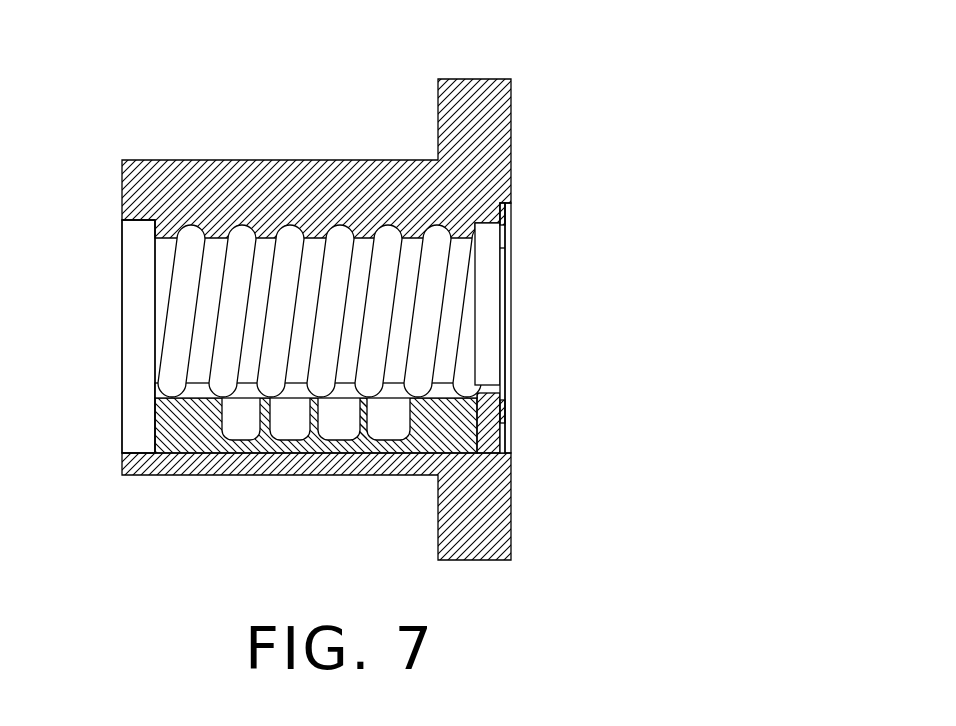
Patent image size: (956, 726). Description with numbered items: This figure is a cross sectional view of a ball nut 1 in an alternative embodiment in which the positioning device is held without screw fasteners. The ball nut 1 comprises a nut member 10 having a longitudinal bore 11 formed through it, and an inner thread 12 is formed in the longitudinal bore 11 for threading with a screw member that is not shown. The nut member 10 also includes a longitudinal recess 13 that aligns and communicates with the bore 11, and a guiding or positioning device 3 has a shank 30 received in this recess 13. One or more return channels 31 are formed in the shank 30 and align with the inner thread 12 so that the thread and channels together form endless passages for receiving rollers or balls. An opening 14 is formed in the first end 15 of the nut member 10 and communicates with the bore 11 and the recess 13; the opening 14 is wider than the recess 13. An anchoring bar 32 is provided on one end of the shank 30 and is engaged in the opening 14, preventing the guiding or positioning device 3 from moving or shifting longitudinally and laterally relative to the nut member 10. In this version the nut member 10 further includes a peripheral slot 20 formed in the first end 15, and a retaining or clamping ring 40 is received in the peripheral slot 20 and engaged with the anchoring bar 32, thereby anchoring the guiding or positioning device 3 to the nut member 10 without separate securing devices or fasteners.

The ball nut 1 is at (357, 315).
The guiding or positioning device 3 is at (156, 404).
The nut member 10 is at (257, 160).
The longitudinal bore 11 is at (481, 307).
The inner thread 12 is at (390, 222).
The longitudinal recess 13 is at (282, 452).
The opening 14 is at (503, 440).
The first end 15 is at (511, 519).
The peripheral slot 20 is at (511, 203).
The shank 30 is at (316, 481).
The return channels 31 is at (383, 424).
The anchoring bar 32 is at (484, 425).
The retaining or clamping ring 40 is at (507, 412).